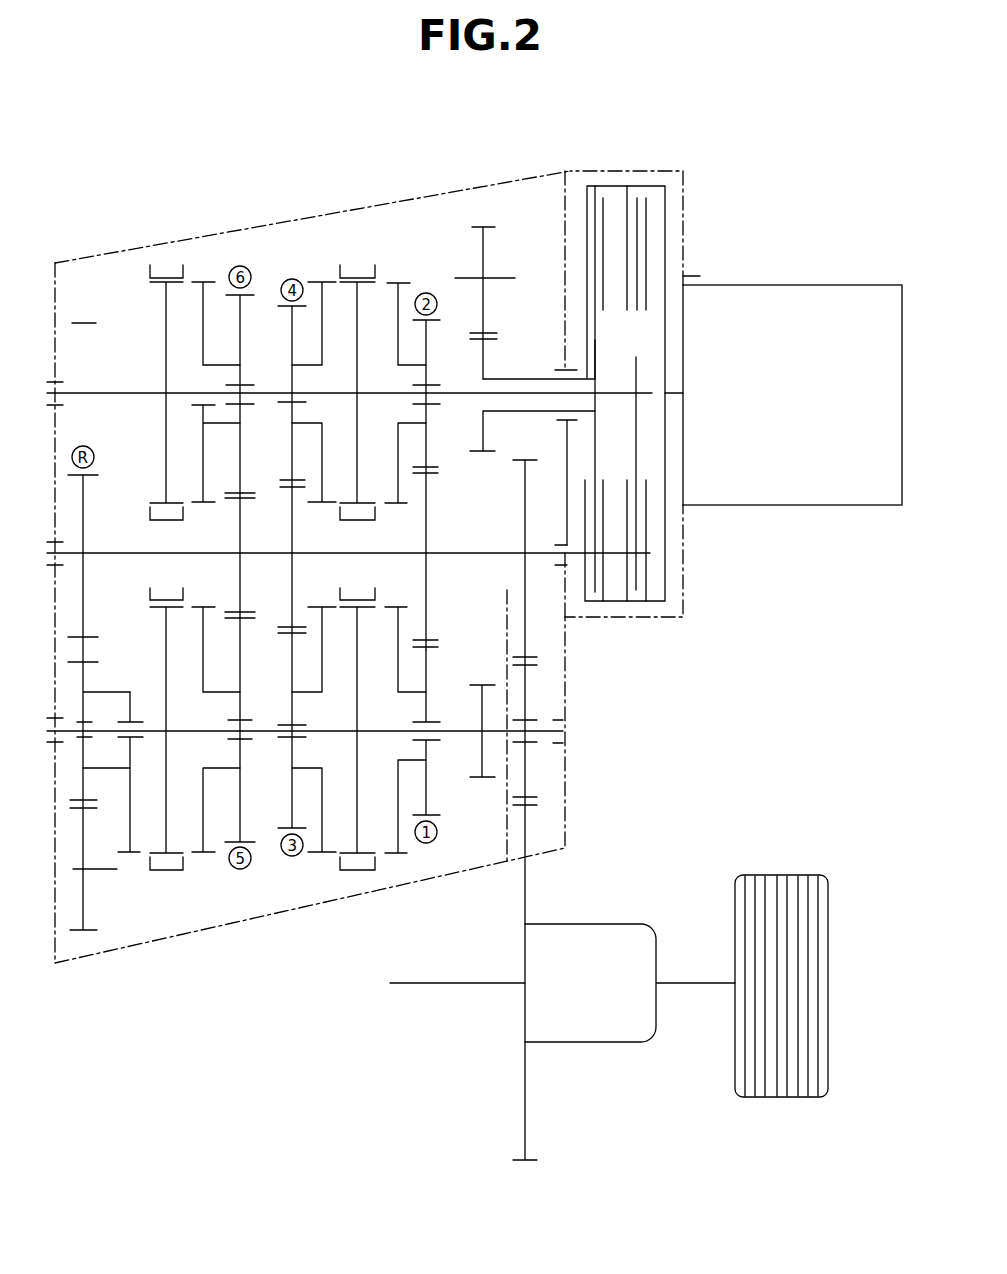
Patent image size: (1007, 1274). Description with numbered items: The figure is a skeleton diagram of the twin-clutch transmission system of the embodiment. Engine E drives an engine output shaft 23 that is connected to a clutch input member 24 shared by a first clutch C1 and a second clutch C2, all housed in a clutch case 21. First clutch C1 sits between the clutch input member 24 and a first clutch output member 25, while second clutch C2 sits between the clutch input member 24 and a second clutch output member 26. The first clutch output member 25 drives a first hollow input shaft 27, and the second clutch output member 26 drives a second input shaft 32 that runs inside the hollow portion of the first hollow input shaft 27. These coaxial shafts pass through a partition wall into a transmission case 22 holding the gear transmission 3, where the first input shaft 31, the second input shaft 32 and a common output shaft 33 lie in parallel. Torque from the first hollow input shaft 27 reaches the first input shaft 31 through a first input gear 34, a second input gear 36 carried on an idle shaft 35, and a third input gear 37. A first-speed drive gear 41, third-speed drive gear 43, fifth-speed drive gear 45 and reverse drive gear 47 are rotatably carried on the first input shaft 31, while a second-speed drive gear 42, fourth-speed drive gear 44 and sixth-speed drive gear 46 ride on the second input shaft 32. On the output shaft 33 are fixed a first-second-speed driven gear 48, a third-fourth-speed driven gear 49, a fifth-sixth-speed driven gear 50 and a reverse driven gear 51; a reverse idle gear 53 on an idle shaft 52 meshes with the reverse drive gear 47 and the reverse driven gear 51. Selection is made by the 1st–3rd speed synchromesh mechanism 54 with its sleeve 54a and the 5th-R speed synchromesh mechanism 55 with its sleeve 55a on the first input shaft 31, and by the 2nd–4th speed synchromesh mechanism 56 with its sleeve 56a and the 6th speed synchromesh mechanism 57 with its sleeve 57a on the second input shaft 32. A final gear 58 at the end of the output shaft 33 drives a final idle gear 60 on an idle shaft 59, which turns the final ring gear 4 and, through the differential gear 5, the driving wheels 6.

The gear transmission 3 is at (84, 309).
The final ring gear 4 is at (527, 885).
The differential gear 5 is at (622, 925).
The driving wheels 6 is at (782, 875).
The clutch case 21 is at (683, 183).
The transmission case 22 is at (263, 222).
The engine output shaft 23 is at (676, 395).
The clutch input member 24 is at (665, 237).
The first clutch output member 25 is at (595, 340).
The second clutch output member 26 is at (636, 360).
The first hollow input shaft 27 is at (527, 379).
The first input shaft 31 is at (452, 728).
The second input shaft 32 is at (454, 398).
The common output shaft 33 is at (458, 553).
The first input gear 34 is at (493, 452).
The idle shaft 35 is at (500, 278).
The second input gear 36 is at (493, 228).
The third input gear 37 is at (485, 780).
The first-speed drive gear 41 is at (427, 785).
The second-speed drive gear 42 is at (427, 340).
The third-speed drive gear 43 is at (292, 778).
The fourth-speed drive gear 44 is at (292, 332).
The fifth-speed drive gear 45 is at (240, 792).
The sixth-speed drive gear 46 is at (240, 354).
The reverse drive gear 47 is at (85, 778).
The first-second-speed driven gear 48 is at (427, 587).
The third-fourth-speed driven gear 49 is at (292, 597).
The fifth-sixth-speed driven gear 50 is at (240, 597).
The reverse driven gear 51 is at (83, 597).
The idle shaft 52 is at (100, 870).
The reverse idle gear 53 is at (90, 930).
The 1st–3rd speed synchromesh mechanism 54 is at (362, 779).
The sleeve 54a is at (362, 863).
The 5th-R speed synchromesh mechanism 55 is at (199, 792).
The sleeve 55a is at (168, 874).
The 2nd–4th speed synchromesh mechanism 56 is at (394, 367).
The sleeve 56a is at (357, 278).
The 6th speed synchromesh mechanism 57 is at (172, 350).
The sleeve 57a is at (176, 272).
The final gear 58 is at (525, 490).
The idle shaft 59 is at (537, 728).
The final idle gear 60 is at (527, 767).
The first clutch C1 is at (584, 198).
The second clutch C2 is at (657, 206).
The engine E is at (852, 285).